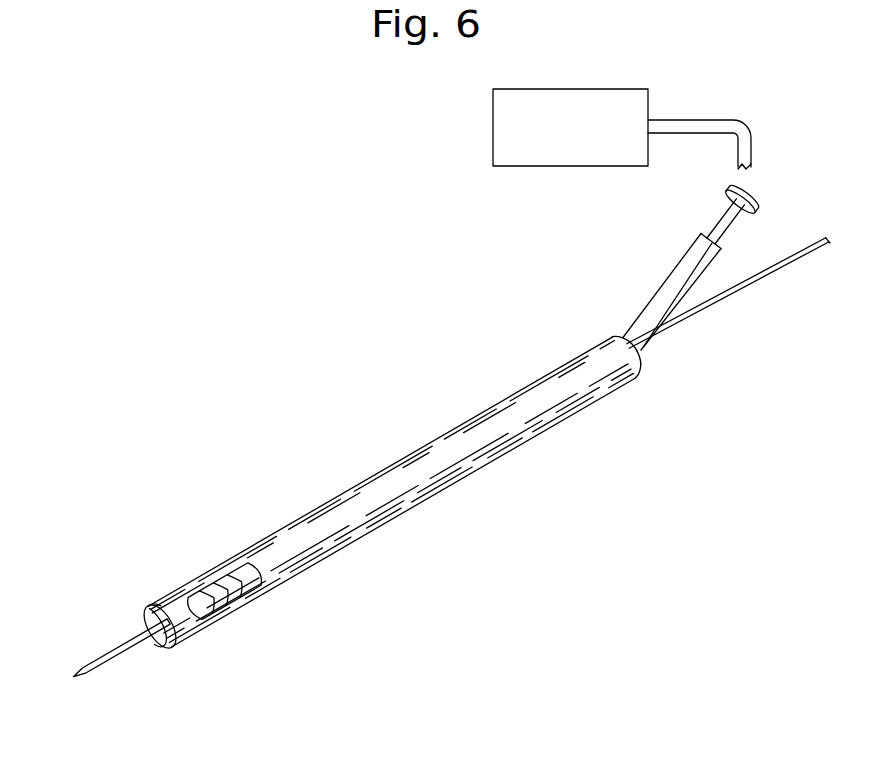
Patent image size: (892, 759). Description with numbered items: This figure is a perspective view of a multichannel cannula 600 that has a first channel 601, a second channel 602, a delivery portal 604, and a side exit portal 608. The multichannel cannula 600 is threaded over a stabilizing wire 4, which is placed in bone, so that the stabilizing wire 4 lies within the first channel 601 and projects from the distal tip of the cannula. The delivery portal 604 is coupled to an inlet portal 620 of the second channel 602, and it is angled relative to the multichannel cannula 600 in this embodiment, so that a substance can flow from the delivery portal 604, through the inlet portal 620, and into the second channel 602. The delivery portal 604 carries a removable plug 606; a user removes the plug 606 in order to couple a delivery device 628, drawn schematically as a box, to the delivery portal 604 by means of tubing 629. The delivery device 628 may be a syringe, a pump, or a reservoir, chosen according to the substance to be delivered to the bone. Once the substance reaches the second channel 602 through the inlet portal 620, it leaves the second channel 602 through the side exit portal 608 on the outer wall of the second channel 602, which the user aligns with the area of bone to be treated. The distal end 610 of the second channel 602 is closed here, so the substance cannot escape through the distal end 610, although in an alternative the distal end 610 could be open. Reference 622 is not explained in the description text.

The stabilizing wire 4 is at (97, 653).
The multichannel cannula 600 is at (343, 435).
The first channel 601 is at (153, 638).
The second channel 602 is at (208, 607).
The delivery portal 604 is at (660, 280).
The removable plug 606 is at (718, 218).
The side exit portal 608 is at (262, 590).
The distal end 610 is at (157, 605).
The inlet portal 620 is at (650, 347).
The lumen 622 is at (143, 618).
The delivery device 628 is at (493, 127).
The tubing 629 is at (716, 120).